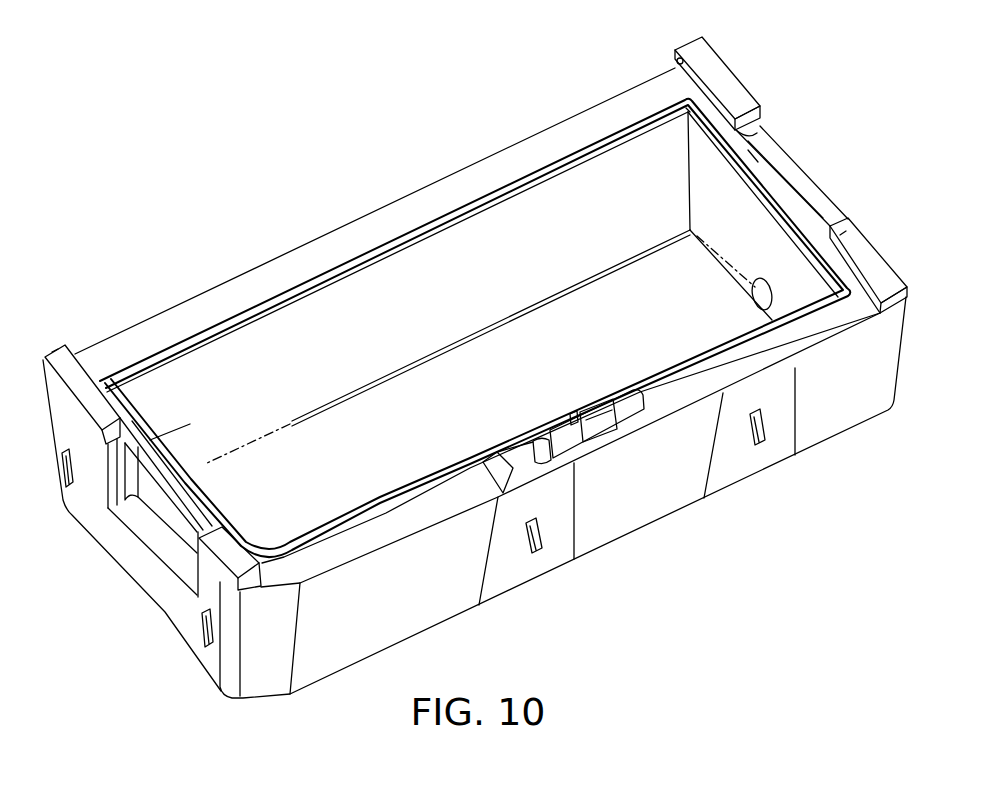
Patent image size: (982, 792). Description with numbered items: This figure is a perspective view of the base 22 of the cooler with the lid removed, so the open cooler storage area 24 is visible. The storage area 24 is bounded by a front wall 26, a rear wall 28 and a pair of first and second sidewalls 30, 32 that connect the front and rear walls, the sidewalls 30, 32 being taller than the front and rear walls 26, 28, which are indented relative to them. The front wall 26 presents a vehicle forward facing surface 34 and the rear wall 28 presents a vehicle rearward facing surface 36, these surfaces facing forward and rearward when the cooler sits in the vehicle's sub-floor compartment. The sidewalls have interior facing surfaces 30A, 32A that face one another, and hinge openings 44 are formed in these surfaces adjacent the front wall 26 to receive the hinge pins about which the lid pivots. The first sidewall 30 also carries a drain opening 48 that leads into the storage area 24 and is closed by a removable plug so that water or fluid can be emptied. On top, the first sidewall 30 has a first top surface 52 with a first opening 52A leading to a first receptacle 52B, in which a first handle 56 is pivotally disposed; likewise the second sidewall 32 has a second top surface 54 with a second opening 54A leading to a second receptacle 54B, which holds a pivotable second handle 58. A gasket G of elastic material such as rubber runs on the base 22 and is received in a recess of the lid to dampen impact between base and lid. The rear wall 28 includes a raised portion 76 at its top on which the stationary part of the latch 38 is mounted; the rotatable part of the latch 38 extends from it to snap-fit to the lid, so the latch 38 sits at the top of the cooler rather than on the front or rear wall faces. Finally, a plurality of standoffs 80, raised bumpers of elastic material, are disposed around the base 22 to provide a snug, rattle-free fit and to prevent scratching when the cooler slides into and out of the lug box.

The base 22 is at (299, 169).
The cooler storage area 24 is at (599, 201).
The front wall 26 is at (501, 168).
The rear wall 28 is at (383, 527).
The first sidewall 30 is at (725, 79).
The interior facing surface 30A is at (668, 105).
The second sidewall 32 is at (84, 377).
The interior facing surface 32A is at (75, 342).
The vehicle forward facing surface 34 is at (239, 280).
The vehicle rearward facing surface 36 is at (638, 492).
The latch 38 is at (602, 388).
The hinge opening 44 is at (678, 60).
The drain opening 48 is at (752, 290).
The first top surface 52 is at (864, 258).
The first opening 52A is at (845, 226).
The first receptacle 52B is at (769, 134).
The second top surface 54 is at (228, 558).
The second opening 54A is at (108, 440).
The second receptacle 54B is at (155, 411).
The first handle 56 is at (793, 172).
The second handle 58 is at (165, 445).
The raised portion 76 is at (516, 459).
The standoffs 80 is at (62, 466).
The gasket G is at (359, 258).